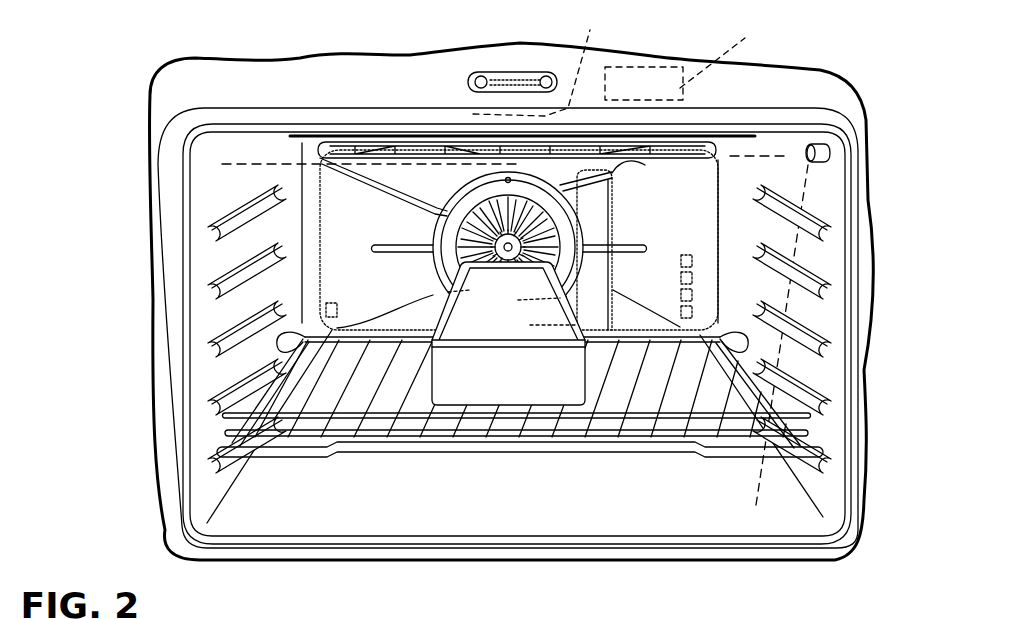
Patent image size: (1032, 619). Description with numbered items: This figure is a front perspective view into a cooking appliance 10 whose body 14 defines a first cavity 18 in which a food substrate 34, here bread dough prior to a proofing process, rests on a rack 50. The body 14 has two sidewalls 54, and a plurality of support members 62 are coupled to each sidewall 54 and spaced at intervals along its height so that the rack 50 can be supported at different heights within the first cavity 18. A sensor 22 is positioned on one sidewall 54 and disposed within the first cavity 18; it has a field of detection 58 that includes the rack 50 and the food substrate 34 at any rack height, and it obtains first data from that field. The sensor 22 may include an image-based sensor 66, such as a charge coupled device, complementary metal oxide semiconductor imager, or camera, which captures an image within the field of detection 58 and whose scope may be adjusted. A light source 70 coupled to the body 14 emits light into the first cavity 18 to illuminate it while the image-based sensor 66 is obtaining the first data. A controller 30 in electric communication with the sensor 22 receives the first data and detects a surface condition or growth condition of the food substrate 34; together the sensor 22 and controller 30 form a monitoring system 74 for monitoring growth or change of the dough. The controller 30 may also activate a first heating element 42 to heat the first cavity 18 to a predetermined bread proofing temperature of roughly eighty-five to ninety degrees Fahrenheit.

The cooking appliance 10 is at (820, 59).
The body 14 is at (238, 120).
The first cavity 18 is at (207, 150).
The sensor 22 is at (832, 160).
The controller 30 is at (684, 55).
The food substrate 34 is at (483, 313).
The first heating element 42 is at (320, 150).
The rack 50 is at (255, 480).
The sidewall 54 is at (203, 197).
The field of detection 58 is at (862, 263).
The support members 62 is at (212, 262).
The image-based sensor 66 is at (829, 144).
The light source 70 is at (544, 63).
The monitoring system 74 is at (799, 101).